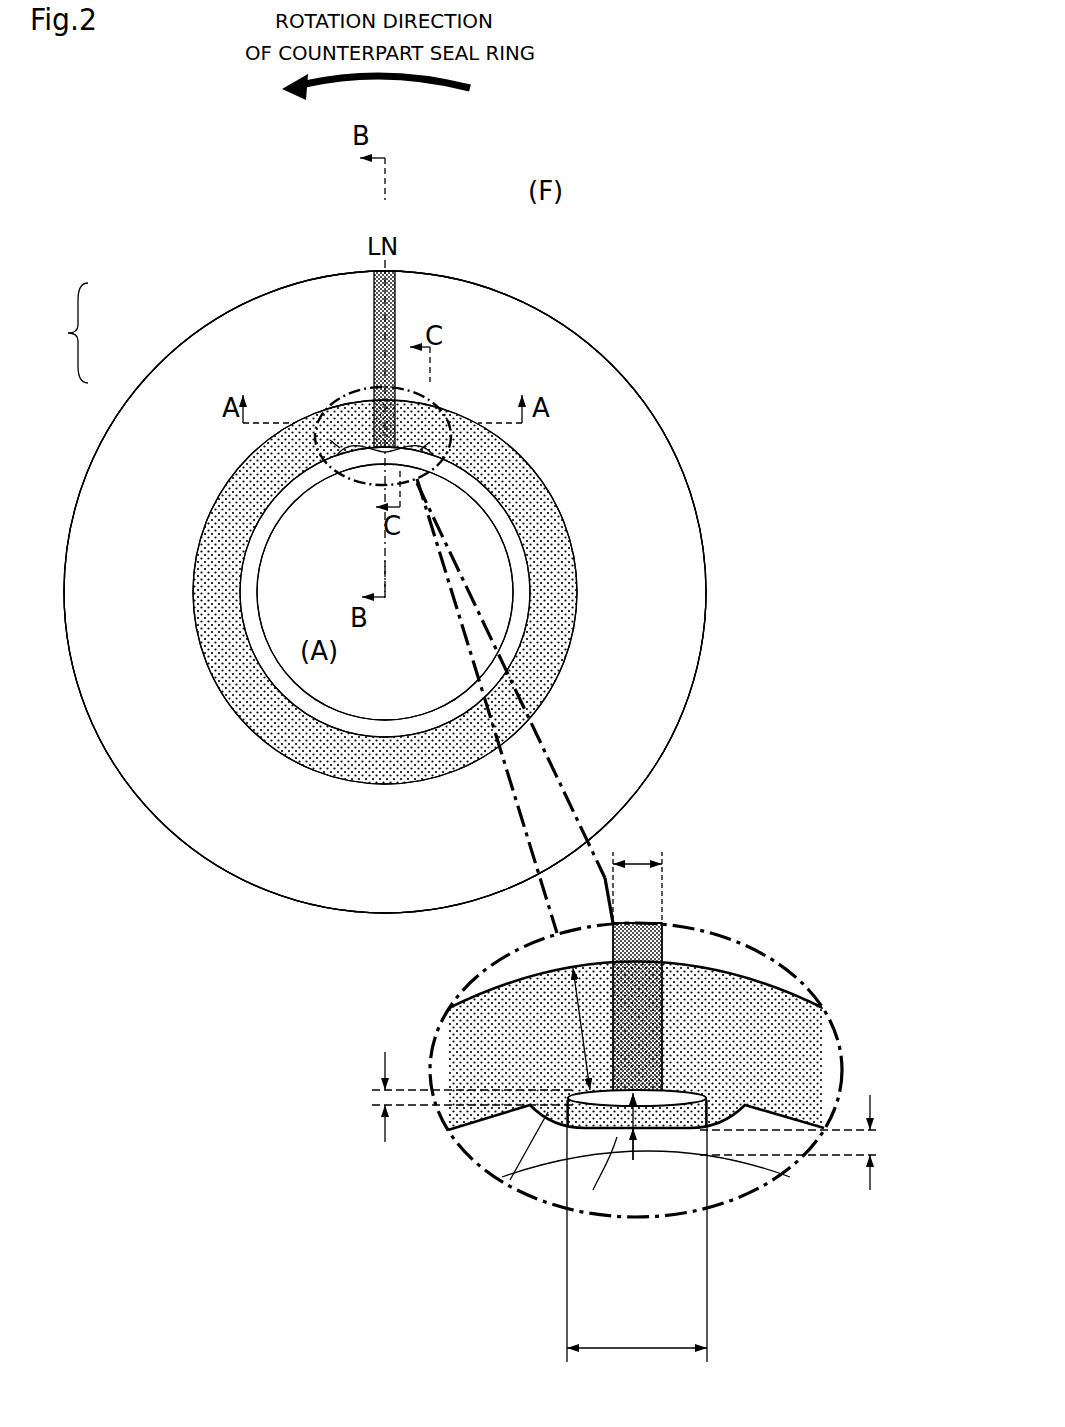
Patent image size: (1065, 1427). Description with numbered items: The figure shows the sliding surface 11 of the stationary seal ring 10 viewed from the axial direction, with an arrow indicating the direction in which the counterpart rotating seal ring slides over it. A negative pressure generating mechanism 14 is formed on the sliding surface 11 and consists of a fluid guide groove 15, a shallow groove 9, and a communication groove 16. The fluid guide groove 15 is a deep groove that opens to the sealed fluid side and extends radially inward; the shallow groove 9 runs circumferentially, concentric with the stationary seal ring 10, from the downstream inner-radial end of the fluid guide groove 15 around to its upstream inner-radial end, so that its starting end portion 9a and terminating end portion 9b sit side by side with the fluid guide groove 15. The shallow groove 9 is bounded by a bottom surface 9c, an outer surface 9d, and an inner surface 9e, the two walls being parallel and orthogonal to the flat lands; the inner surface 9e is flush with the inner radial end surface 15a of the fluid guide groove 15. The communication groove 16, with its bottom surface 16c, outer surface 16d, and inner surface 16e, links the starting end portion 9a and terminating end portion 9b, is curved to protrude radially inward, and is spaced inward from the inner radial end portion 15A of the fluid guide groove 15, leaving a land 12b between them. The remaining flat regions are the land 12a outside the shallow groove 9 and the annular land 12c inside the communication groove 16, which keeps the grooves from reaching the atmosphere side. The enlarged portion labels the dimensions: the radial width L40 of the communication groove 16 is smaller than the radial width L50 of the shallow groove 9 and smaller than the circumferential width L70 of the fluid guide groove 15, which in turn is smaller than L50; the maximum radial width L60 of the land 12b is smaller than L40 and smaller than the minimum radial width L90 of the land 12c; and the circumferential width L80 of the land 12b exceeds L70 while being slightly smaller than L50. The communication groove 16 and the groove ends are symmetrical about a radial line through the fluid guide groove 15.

The shallow groove 9 is at (347, 425).
The starting end portion 9a is at (368, 428).
The terminating end portion 9b is at (432, 480).
The bottom surface 9c is at (550, 556).
The outer surface 9d is at (567, 592).
The inner surface 9e is at (238, 541).
The stationary seal ring 10 is at (578, 306).
The sliding surface 11 is at (621, 436).
The land 12a is at (648, 476).
The land 12b is at (612, 1135).
The annular land 12c is at (388, 736).
The negative pressure generating mechanism 14 is at (58, 333).
The fluid guide groove 15 is at (372, 322).
The inner radial end surface 15a is at (647, 1030).
The inner radial end portion 15A is at (665, 1040).
The communication groove 16 is at (340, 452).
The bottom surface 16c is at (706, 1124).
The outer surface 16d is at (706, 1122).
The inner surface 16e is at (552, 1112).
The radial width dimension L40 is at (638, 1150).
The radial width dimension L50 is at (559, 1029).
The maximum width dimension L60 is at (448, 1097).
The circumferential width dimension L70 is at (637, 869).
The circumferential width dimension L80 is at (637, 1243).
The minimum width dimension L90 is at (818, 1142).